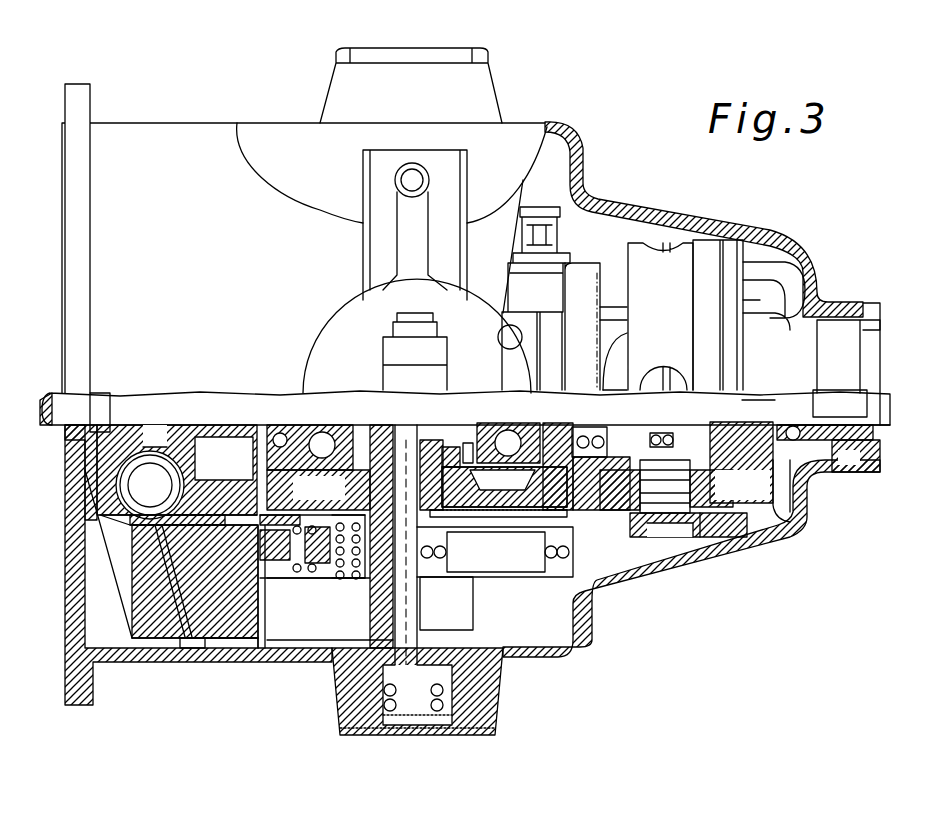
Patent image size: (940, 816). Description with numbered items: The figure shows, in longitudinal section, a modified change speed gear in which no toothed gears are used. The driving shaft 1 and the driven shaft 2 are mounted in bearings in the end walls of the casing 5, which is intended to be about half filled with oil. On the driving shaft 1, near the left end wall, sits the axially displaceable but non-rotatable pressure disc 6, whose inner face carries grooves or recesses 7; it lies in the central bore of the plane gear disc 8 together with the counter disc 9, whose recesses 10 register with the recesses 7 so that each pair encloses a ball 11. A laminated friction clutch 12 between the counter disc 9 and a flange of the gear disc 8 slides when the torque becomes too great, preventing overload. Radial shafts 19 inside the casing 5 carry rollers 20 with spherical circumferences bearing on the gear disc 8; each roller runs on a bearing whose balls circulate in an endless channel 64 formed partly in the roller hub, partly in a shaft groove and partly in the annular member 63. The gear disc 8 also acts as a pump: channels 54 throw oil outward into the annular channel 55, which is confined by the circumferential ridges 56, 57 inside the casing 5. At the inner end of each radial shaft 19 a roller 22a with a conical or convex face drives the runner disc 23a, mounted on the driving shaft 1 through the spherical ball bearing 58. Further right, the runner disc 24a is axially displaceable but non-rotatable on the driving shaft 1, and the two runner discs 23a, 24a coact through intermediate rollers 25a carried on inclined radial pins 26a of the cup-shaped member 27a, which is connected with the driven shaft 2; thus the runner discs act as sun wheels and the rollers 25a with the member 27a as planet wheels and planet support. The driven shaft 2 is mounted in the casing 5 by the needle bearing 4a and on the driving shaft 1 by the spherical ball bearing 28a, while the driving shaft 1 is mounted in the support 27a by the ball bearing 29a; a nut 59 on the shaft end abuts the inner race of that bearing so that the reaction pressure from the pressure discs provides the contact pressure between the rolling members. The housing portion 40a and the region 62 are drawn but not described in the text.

The driving shaft 1 is at (60, 365).
The driven shaft 2 is at (885, 445).
The needle bearing 4a is at (840, 470).
The casing 5 is at (795, 232).
The pressure disc 6 is at (75, 480).
The grooves or recesses 7 is at (80, 520).
The gear disc 8 is at (132, 590).
The counter disc 9 is at (225, 433).
The grooves or recesses 10 is at (205, 478).
The ball 11 is at (135, 512).
The laminated friction clutch 12 is at (235, 492).
The radial shafts 19 is at (368, 622).
The roller 20 is at (587, 277).
The roller 22a is at (508, 275).
The runner disc 23a is at (632, 235).
The runner disc 24a is at (728, 440).
The intermediate rollers 25a is at (630, 300).
The radial pins 26a is at (680, 540).
The cup-shaped member 27a is at (820, 290).
The spherical ball bearing 28a is at (648, 430).
The ball bearing 29a is at (770, 420).
The housing section 40a is at (282, 582).
The channels 54 is at (180, 652).
The annular groove or channel 55 is at (210, 652).
The circumferential ridge 56 is at (258, 652).
The circumferential ridge 57 is at (160, 662).
The spherical ball bearing 58 is at (580, 420).
The nut 59 is at (885, 425).
The seal 62 is at (305, 565).
The annular member 63 is at (318, 490).
The endless channel 64 is at (350, 578).